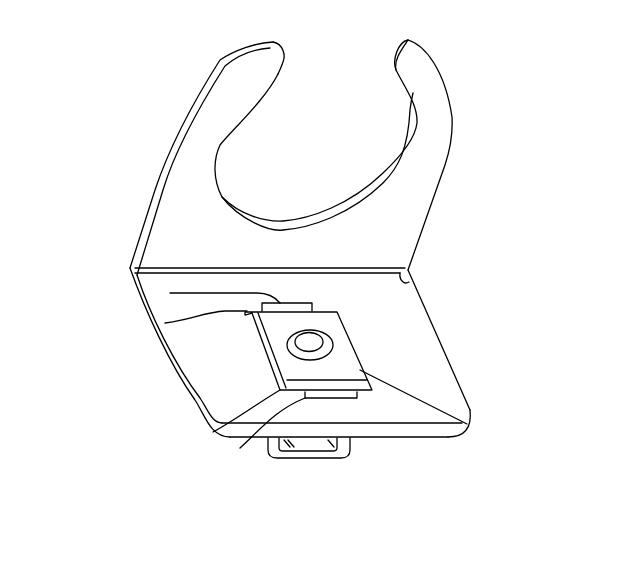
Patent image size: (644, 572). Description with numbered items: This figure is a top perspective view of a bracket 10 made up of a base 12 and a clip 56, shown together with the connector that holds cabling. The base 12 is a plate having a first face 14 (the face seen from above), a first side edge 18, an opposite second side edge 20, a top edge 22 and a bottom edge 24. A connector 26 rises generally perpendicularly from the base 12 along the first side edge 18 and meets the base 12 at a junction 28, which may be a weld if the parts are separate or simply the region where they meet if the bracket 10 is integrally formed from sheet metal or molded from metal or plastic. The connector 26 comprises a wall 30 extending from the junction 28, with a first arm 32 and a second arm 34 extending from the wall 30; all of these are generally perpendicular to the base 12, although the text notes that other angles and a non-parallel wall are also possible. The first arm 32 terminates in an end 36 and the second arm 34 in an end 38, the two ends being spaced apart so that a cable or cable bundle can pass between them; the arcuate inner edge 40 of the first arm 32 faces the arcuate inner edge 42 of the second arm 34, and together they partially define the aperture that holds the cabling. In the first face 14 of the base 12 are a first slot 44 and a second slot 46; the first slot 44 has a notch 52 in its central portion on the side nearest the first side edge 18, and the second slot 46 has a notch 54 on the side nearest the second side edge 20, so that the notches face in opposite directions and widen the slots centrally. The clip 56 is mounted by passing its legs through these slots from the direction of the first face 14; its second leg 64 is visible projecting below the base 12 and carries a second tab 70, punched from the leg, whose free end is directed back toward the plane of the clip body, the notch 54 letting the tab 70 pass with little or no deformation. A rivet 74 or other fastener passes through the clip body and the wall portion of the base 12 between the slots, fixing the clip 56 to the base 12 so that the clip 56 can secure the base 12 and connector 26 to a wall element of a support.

The bracket 10 is at (487, 243).
The base 12 is at (427, 380).
The first face 14 is at (410, 323).
The first side edge 18 is at (413, 287).
The second side edge 20 is at (413, 438).
The top edge 22 is at (442, 343).
The bottom edge 24 is at (172, 364).
The connector 26 is at (442, 215).
The junction 28 is at (410, 267).
The wall 30 is at (162, 229).
The first arm 32 is at (181, 152).
The second arm 34 is at (437, 150).
The end of first arm 36 is at (270, 58).
The end of second arm 38 is at (412, 58).
The arcuate inner edge of first arm 40 is at (222, 143).
The arcuate inner edge of second arm 42 is at (424, 149).
The first slot 44 is at (165, 323).
The second slot 46 is at (213, 432).
The notch 52 is at (170, 293).
The notch 54 is at (240, 448).
The clip 56 is at (470, 426).
The second leg 64 is at (345, 452).
The second tab 70 is at (312, 446).
The rivet 74 is at (300, 344).